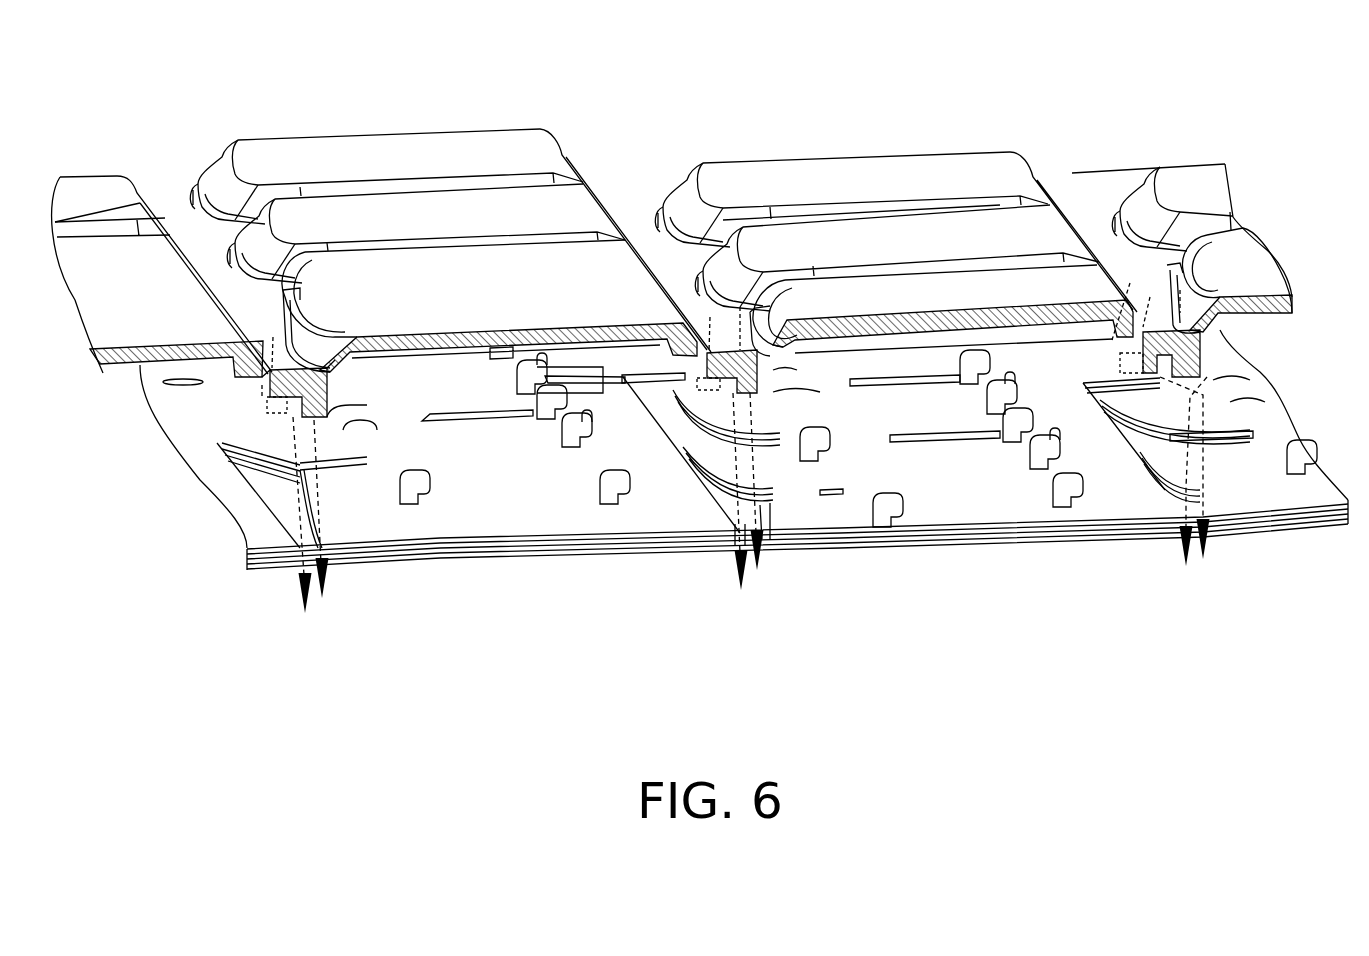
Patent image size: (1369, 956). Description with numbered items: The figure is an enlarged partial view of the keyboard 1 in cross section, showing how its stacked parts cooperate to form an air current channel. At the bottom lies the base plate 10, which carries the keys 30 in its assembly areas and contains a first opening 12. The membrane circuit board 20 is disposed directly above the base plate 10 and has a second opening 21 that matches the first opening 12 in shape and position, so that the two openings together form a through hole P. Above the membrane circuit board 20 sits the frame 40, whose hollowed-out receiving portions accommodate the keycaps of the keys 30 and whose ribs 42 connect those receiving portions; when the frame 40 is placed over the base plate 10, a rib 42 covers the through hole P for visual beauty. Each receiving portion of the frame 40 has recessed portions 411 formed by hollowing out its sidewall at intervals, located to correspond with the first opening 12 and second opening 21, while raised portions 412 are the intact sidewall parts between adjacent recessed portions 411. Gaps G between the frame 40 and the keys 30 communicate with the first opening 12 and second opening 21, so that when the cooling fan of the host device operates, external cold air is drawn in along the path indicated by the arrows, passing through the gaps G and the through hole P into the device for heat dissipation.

The keyboard 1 is at (118, 100).
The keys 30 is at (350, 138).
The ribs 42 is at (173, 200).
The frame 40 is at (1107, 187).
The membrane circuit board 20 is at (243, 530).
The base plate 10 is at (247, 566).
The recessed portion 411 is at (262, 412).
The raised portion 412 is at (770, 392).
The gaps G is at (250, 385).
The through hole P is at (286, 522).
The first opening 12 is at (738, 548).
The second opening 21 is at (763, 548).